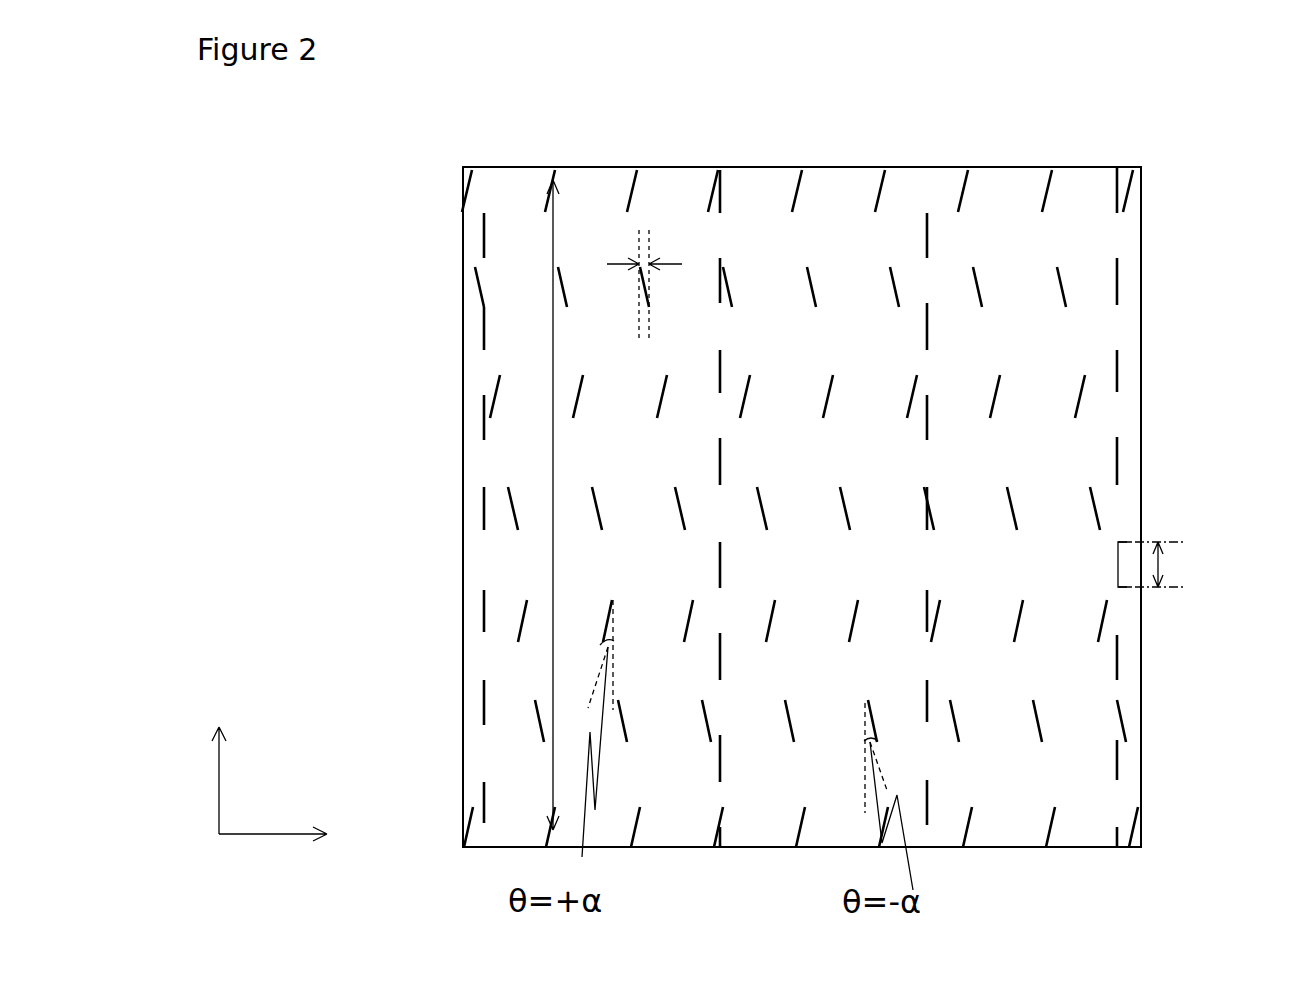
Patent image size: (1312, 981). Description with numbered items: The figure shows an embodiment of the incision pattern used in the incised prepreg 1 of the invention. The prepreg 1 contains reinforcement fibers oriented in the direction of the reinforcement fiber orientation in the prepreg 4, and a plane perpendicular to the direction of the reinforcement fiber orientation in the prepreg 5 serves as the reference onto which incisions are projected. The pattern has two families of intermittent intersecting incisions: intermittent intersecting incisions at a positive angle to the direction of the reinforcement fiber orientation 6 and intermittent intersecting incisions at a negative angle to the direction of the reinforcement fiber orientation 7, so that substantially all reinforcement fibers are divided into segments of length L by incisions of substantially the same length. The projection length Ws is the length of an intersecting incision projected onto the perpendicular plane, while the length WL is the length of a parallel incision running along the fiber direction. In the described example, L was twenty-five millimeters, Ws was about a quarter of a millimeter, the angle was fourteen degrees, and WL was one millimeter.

The prepreg 1 is at (1095, 430).
The direction of the reinforcement fiber orientation in the prepreg 4 is at (219, 785).
The plane perpendicular to the direction of the reinforcement fiber orientation in t 5 is at (275, 834).
The intermittent intersecting incisions (positive angle to the direction of the rein 6 is at (962, 205).
The intermittent intersecting incisions (negative angle to the direction of the rein 7 is at (1065, 292).
The length of the reinforcement fibers divided by the intersecting incisions L is at (553, 440).
The projection length of the intersecting incision Ws is at (645, 265).
The length of the parallel incision WL is at (1168, 565).